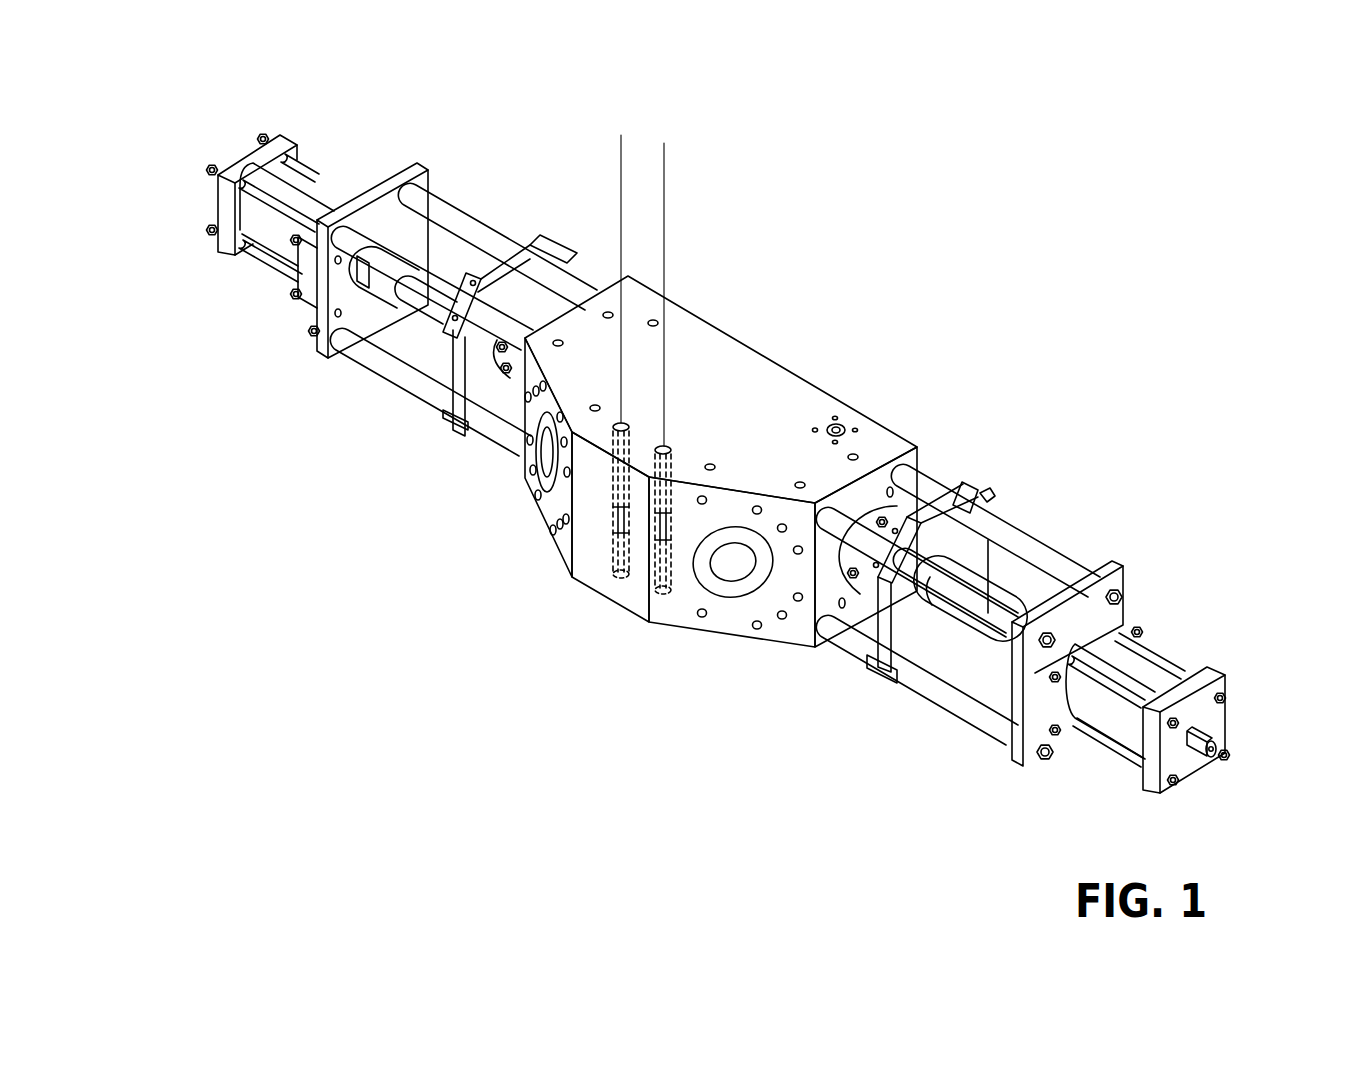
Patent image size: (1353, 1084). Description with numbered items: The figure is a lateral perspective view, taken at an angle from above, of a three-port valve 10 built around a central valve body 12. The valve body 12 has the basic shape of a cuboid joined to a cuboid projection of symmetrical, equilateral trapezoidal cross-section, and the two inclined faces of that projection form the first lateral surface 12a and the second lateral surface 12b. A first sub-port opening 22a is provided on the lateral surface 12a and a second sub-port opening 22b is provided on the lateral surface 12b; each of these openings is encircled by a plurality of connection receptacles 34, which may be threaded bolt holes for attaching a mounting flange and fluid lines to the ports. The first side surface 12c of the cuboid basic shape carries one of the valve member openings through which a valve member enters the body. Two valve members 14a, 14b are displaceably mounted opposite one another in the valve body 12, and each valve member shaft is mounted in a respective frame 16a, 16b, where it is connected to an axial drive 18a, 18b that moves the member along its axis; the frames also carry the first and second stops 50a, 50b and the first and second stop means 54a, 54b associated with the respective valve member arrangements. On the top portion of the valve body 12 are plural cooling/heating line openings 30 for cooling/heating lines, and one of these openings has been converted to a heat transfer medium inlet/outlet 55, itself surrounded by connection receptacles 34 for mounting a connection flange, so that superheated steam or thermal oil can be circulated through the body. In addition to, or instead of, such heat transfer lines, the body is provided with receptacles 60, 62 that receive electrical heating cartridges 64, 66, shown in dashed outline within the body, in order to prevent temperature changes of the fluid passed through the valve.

The 3-port valve 10 is at (198, 104).
The valve body 12 is at (671, 300).
The first lateral surface of valve body 12a is at (653, 550).
The second lateral surface of valve body 12b is at (550, 508).
The first side surface of valve body 12c is at (862, 490).
The first valve member 14a is at (993, 650).
The second valve member 14b is at (421, 319).
The first frame 16a is at (1058, 528).
The second frame 16b is at (470, 190).
The first axial drive 18a is at (1100, 697).
The second axial drive 18b is at (297, 177).
The first sub-port opening 22a is at (730, 568).
The second sub-port opening 22b is at (540, 455).
The cooling/heating line openings 30 is at (653, 323).
The connection receptacle 34 is at (815, 430).
The first stop 50a is at (903, 603).
The second stop 50b is at (515, 283).
The first stop means 54a is at (950, 623).
The second stop means 54b is at (433, 262).
The heat transfer medium inlet/outlet 55 is at (828, 420).
The receptacle for electrical heating cartridge 60 is at (623, 423).
The receptacle for electrical heating cartridge 62 is at (660, 448).
The electrical heating cartridge 64 is at (617, 523).
The electrical heating cartridge 66 is at (667, 535).